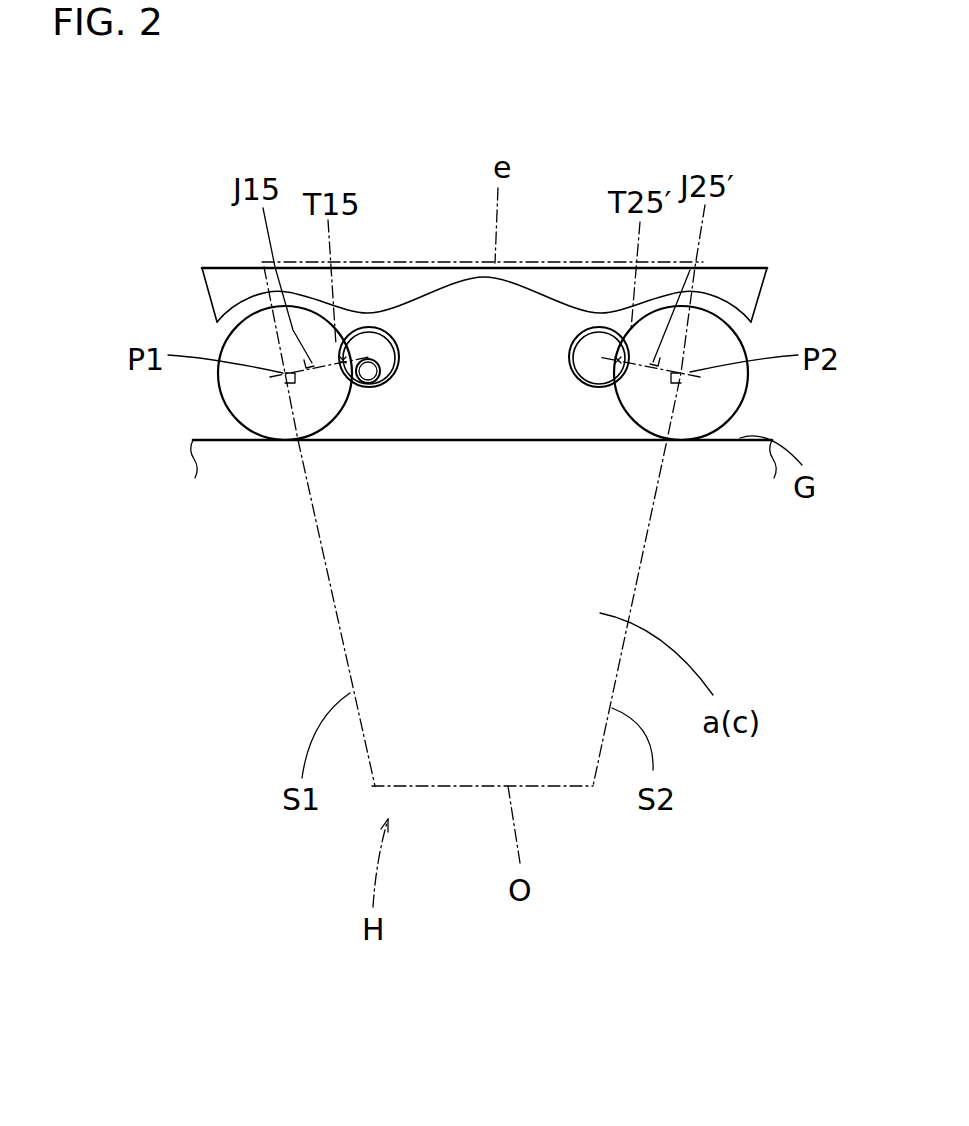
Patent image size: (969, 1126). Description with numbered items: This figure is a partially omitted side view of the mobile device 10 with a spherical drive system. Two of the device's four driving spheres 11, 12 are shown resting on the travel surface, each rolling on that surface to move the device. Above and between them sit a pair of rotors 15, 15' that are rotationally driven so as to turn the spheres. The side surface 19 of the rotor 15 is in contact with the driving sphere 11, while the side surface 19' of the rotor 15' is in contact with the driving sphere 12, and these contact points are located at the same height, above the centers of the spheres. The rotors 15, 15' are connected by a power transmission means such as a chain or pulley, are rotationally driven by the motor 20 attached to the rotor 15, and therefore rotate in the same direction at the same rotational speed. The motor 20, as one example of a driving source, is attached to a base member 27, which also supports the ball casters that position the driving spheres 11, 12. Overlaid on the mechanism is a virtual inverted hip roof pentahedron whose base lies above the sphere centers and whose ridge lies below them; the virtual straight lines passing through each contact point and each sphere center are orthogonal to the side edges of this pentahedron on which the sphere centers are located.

The mobile device with a spherical drive system 10 is at (740, 122).
The driving sphere 11 is at (248, 390).
The driving sphere 12 is at (720, 388).
The rotor 15 is at (388, 233).
The side surface of the rotor 19 is at (390, 292).
The motor 20 is at (367, 377).
The base member 27 is at (733, 283).
The rotor 15' is at (587, 233).
The side surface of the rotor 19' is at (579, 292).